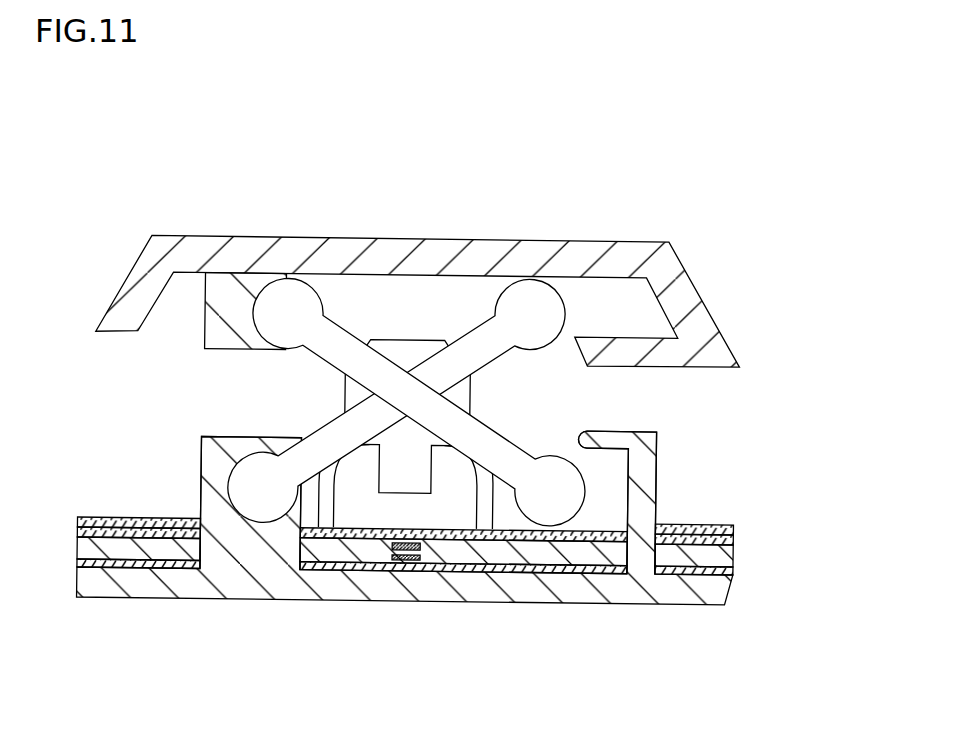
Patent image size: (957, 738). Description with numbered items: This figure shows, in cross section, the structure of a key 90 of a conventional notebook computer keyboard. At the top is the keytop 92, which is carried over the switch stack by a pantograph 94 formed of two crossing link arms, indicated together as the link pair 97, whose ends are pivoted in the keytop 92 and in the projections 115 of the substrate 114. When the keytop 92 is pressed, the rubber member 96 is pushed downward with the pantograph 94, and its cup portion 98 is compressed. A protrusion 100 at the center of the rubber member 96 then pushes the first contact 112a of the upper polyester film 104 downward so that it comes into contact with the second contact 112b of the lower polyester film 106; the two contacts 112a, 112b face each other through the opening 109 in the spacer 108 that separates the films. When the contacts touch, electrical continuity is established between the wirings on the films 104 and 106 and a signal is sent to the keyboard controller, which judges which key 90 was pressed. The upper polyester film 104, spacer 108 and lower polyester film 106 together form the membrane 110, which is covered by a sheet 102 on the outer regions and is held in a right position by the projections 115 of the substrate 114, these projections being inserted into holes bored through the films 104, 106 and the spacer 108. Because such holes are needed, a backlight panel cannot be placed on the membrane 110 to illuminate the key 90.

The key 90 is at (542, 149).
The keytop 92 is at (545, 256).
The pantograph 94 is at (337, 373).
The rubber member 96 is at (357, 400).
The link mechanism 97 is at (313, 400).
The cup portion 98 is at (483, 477).
The protrusion 100 is at (407, 469).
The cover sheet 102 is at (108, 522).
The upper polyester film 104 is at (733, 522).
The lower polyester film 106 is at (732, 559).
The spacer 108 is at (723, 545).
The spacer opening 109 is at (428, 553).
The membrane 110 is at (484, 544).
The first contact 112a is at (392, 542).
The second contact 112b is at (400, 553).
The substrate 114 is at (123, 581).
The projections 115 is at (217, 446).